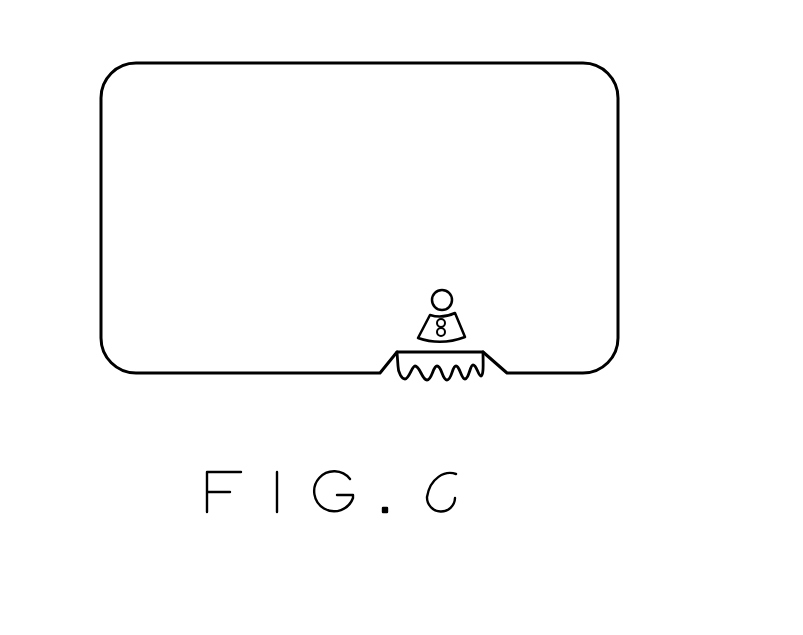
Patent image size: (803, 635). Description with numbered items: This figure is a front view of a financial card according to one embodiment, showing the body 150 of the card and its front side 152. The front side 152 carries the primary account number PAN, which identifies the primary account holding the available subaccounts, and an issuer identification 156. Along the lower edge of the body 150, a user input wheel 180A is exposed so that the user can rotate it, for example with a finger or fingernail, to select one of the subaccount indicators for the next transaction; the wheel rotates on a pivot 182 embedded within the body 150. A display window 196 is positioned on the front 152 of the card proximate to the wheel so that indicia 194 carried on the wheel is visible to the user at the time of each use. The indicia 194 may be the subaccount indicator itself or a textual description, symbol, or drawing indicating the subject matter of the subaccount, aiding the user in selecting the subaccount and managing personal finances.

The body 150 is at (361, 218).
The front side 152 is at (580, 112).
The issuer identification 156 is at (180, 87).
The primary account number PAN is at (490, 198).
The pivot 182 is at (453, 295).
The display window 196 is at (458, 322).
The indicia 194 is at (450, 330).
The user input wheel 180A is at (447, 383).